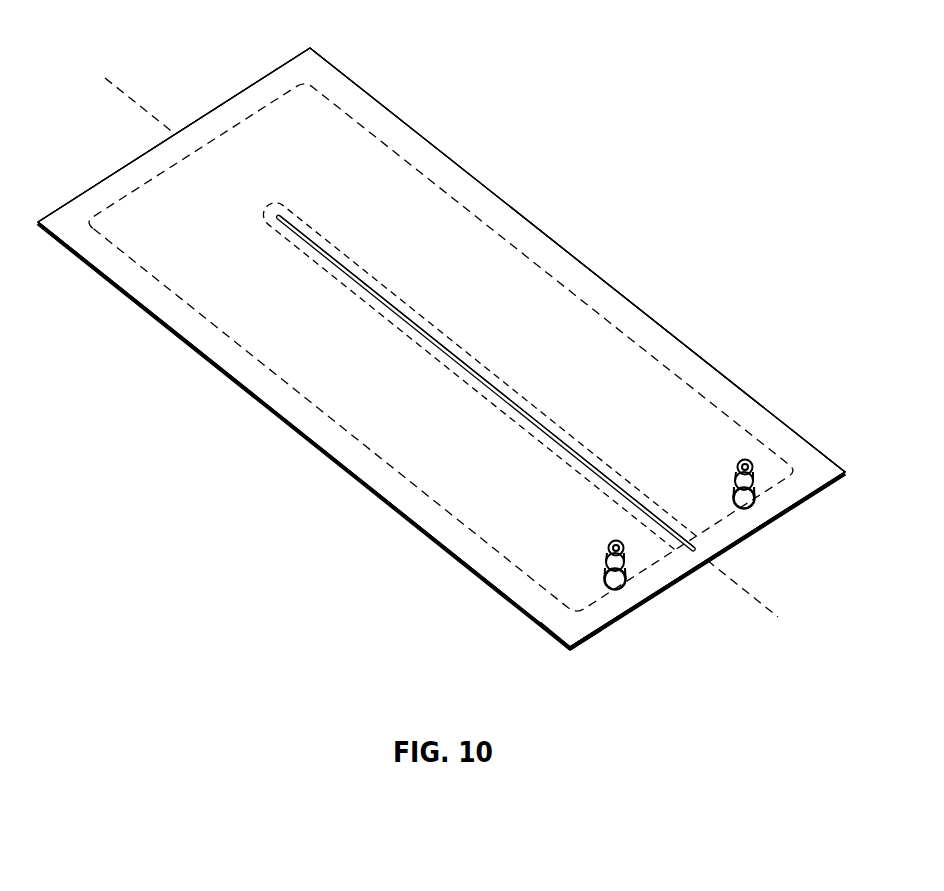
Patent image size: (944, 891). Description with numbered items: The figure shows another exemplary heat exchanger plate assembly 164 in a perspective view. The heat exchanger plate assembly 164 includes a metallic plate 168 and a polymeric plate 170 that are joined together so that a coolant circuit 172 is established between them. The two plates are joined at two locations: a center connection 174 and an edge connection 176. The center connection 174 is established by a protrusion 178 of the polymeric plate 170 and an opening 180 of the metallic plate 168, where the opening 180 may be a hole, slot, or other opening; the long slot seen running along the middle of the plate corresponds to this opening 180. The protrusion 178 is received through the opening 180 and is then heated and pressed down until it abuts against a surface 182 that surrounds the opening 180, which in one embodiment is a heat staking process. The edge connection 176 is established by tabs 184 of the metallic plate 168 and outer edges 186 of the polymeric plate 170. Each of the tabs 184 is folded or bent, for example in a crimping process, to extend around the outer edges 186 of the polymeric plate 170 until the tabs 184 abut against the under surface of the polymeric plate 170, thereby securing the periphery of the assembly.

The heat exchanger plate assembly 164 is at (412, 117).
The metallic plate 168 is at (528, 242).
The polymeric plate 170 is at (458, 570).
The coolant circuit 172 is at (408, 434).
The center connection 174 is at (442, 314).
The edge connection 176 is at (668, 596).
The protrusion 178 is at (613, 472).
The opening 180 is at (550, 424).
The surface 182 is at (508, 392).
The tabs 184 is at (135, 160).
The outer edges 186 is at (568, 648).